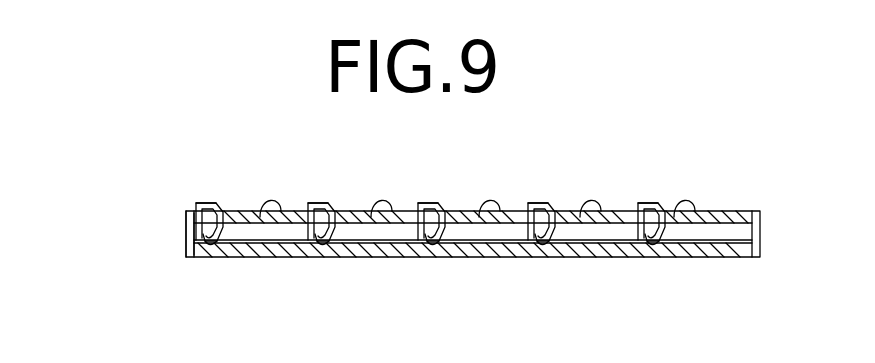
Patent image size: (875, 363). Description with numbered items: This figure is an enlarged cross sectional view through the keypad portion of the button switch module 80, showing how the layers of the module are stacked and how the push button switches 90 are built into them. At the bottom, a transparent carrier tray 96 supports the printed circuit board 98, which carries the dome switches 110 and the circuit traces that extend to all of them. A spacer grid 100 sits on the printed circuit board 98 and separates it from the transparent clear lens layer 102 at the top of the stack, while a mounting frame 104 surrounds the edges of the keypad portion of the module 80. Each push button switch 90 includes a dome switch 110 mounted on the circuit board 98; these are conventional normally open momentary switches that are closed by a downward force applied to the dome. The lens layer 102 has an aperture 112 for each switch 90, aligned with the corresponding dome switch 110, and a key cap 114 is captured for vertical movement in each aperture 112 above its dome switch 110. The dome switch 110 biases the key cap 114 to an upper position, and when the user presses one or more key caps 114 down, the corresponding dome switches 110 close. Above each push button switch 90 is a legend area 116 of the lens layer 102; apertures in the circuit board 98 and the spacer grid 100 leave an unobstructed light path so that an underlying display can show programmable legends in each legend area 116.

The module 80 is at (722, 132).
The push button switch 90 is at (213, 148).
The carrier tray 96 is at (728, 258).
The printed circuit board 98 is at (700, 258).
The spacer grid 100 is at (710, 233).
The lens layer 102 is at (738, 217).
The mounting frame 104 is at (188, 246).
The dome switch 110 is at (218, 245).
The aperture 112 is at (220, 205).
The key cap 114 is at (199, 203).
The legend area 116 is at (281, 211).